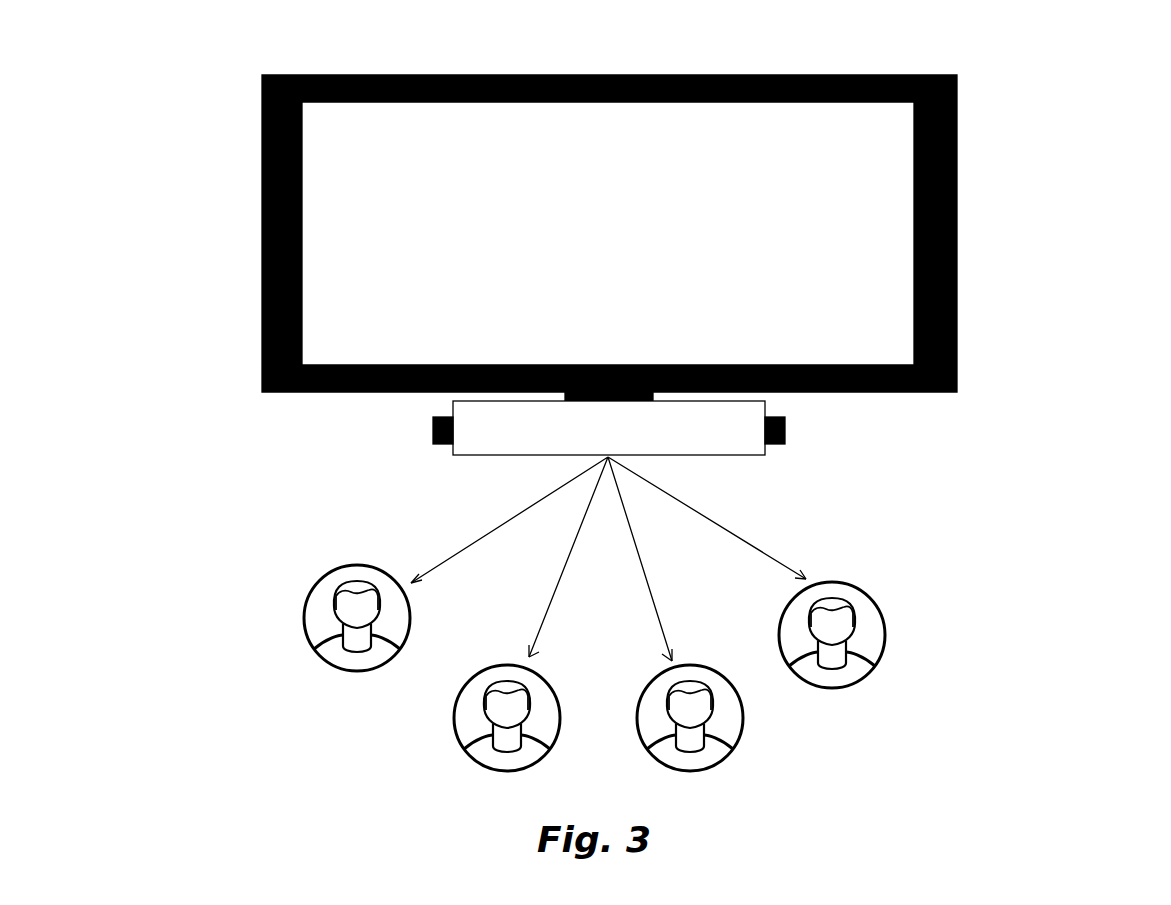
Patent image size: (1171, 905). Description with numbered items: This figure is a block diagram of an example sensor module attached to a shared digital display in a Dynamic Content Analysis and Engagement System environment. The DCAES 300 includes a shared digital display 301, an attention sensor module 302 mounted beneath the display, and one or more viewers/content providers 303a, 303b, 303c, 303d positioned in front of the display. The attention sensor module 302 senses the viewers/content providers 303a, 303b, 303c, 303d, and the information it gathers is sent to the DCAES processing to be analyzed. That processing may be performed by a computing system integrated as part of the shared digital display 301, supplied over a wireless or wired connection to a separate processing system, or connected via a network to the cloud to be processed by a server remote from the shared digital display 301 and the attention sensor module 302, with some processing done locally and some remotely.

The DCAES 300 is at (1077, 95).
The shared digital display 301 is at (958, 212).
The attention sensor module 302 is at (764, 403).
The viewer/content provider 303a is at (305, 621).
The viewer/content provider 303b is at (456, 744).
The viewer/content provider 303c is at (642, 746).
The viewer/content provider 303d is at (868, 672).